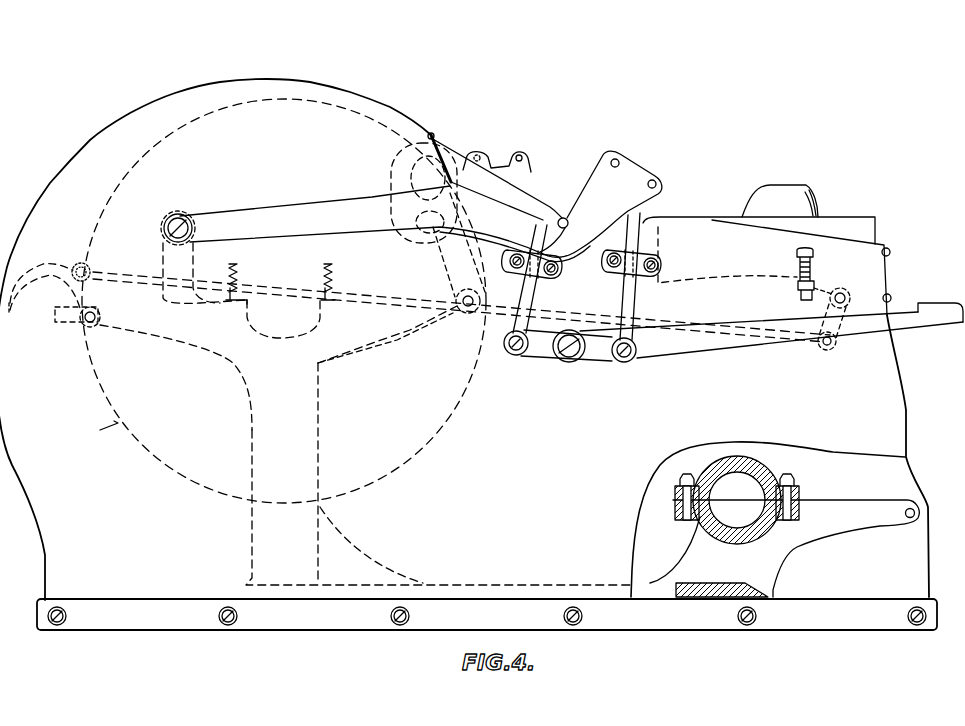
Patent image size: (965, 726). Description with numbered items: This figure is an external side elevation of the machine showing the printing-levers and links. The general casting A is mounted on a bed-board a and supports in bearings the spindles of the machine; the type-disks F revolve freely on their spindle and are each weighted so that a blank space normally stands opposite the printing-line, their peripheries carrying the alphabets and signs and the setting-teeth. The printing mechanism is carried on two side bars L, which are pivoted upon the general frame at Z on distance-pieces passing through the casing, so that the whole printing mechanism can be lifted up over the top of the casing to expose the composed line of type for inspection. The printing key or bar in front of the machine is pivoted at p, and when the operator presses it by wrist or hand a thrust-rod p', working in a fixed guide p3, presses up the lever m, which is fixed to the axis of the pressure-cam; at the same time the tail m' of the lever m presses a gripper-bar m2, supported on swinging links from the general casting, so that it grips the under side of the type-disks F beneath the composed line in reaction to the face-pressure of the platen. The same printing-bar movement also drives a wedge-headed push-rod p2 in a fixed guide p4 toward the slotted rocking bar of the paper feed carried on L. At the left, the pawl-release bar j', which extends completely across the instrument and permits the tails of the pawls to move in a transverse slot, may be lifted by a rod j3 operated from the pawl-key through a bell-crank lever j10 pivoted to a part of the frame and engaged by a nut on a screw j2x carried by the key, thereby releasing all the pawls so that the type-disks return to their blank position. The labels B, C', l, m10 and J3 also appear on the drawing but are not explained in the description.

The general casting A is at (464, 339).
The bed-board a is at (82, 145).
The hump / guide block B is at (818, 213).
The split bearing bracket C' is at (775, 519).
The pivot of side bars Z is at (183, 222).
The side bars L is at (421, 206).
The joint l is at (437, 139).
The lever m is at (496, 179).
The tail of lever m' is at (408, 193).
The gripper-bar m2 is at (453, 243).
The arm m10 is at (437, 253).
The pivot of printing key or bar p is at (733, 332).
The thrust-rod p' is at (533, 279).
The wedge-headed push-rod p2 is at (622, 290).
The fixed guide p3 is at (561, 269).
The fixed guide p4 is at (660, 262).
The rod J3 is at (651, 323).
The pawl-release bar j' is at (54, 280).
The rod j3 is at (135, 278).
The screw j2x is at (815, 267).
The bell-crank lever j10 is at (842, 310).
The type-disks F is at (94, 433).